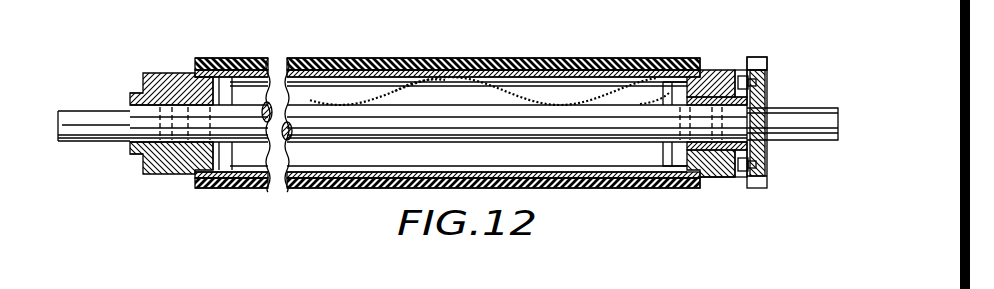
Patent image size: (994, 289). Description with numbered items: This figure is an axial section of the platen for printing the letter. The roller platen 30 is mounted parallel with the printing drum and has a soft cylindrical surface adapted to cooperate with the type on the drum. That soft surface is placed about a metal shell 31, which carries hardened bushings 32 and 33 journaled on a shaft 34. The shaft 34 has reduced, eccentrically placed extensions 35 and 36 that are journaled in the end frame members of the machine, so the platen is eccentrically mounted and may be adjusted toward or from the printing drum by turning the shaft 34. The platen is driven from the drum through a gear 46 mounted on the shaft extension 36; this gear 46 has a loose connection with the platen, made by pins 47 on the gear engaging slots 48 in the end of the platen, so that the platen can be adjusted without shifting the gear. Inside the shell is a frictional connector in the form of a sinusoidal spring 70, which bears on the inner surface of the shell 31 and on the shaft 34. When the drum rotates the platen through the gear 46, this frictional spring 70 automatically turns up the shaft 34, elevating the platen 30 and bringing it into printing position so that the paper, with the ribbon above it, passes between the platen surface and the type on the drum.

The roller platen 30 is at (604, 58).
The metal shell 31 is at (703, 70).
The hardened bushing 32 is at (130, 158).
The hardened bushing 33 is at (726, 175).
The shaft 34 is at (470, 127).
The reduced eccentrically-placed extension 35 is at (87, 119).
The reduced eccentrically-placed extension 36 is at (797, 114).
The gear 46 is at (767, 72).
The pin 47 is at (760, 57).
The slot 48 is at (740, 76).
The sinusoidal spring 70 is at (438, 72).